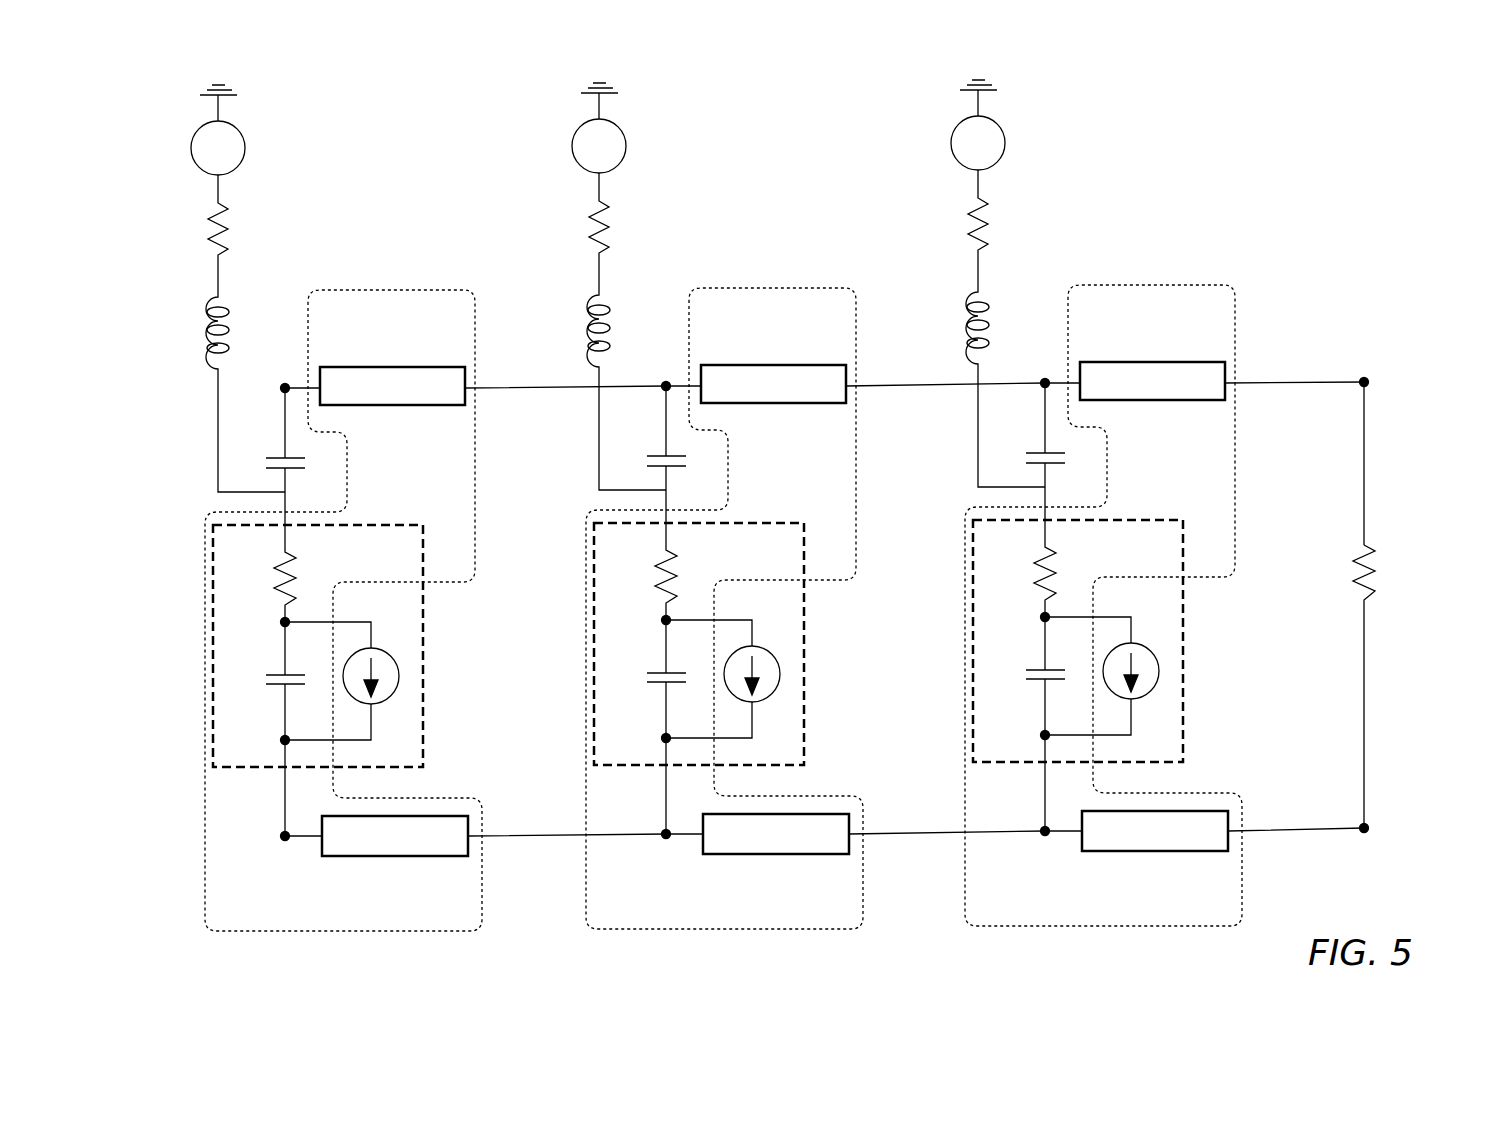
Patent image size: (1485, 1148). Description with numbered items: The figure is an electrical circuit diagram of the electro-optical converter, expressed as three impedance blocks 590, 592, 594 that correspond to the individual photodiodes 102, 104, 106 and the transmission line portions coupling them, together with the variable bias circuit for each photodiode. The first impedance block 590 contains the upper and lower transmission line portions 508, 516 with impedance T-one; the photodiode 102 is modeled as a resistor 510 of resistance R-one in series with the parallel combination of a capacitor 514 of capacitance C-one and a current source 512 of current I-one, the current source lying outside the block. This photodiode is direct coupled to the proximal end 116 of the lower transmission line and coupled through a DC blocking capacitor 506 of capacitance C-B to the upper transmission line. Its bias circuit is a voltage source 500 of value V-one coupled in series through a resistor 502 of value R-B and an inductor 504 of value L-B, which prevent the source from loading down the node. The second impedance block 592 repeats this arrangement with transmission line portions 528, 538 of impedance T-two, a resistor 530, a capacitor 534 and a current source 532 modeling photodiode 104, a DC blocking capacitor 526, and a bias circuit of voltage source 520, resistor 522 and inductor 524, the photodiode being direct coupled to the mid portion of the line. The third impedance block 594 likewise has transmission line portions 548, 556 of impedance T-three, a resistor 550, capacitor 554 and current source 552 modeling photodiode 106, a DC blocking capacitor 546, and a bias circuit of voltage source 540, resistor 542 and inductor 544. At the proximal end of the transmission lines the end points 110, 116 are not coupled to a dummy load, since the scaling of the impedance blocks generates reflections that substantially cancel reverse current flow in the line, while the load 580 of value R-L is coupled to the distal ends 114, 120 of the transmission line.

The voltage source 500 is at (245, 140).
The resistor 502 is at (229, 212).
The inductor 504 is at (226, 306).
The DC blocking capacitor 506 is at (276, 457).
The transmission line portion 508 is at (386, 367).
The resistor 510 is at (298, 567).
The current source 512 is at (381, 652).
The capacitor 514 is at (278, 692).
The transmission line portion 516 is at (393, 858).
The voltage source 520 is at (636, 128).
The resistor 522 is at (614, 230).
The inductor 524 is at (615, 322).
The DC blocking capacitor 526 is at (665, 454).
The transmission line portion 528 is at (756, 366).
The resistor 530 is at (687, 571).
The current source 532 is at (733, 668).
The capacitor 534 is at (646, 679).
The transmission line portion 538 is at (757, 852).
The voltage source 540 is at (1015, 125).
The resistor 542 is at (993, 227).
The inductor 544 is at (994, 319).
The DC blocking capacitor 546 is at (1044, 451).
The transmission line portion 548 is at (1135, 363).
The resistor 550 is at (1066, 568).
The current source 552 is at (1112, 665).
The capacitor 554 is at (1025, 676).
The transmission line portion 556 is at (1136, 849).
The load 580 is at (1378, 563).
The first impedance block 590 is at (337, 933).
The second impedance block 592 is at (724, 629).
The third impedance block 594 is at (1103, 626).
The photodiode 102 is at (260, 757).
The photodiode 104 is at (699, 644).
The photodiode 106 is at (1078, 641).
The end point 110 is at (282, 370).
The distal end 114 is at (1376, 358).
The proximal end 116 is at (282, 860).
The distal end 120 is at (1382, 852).